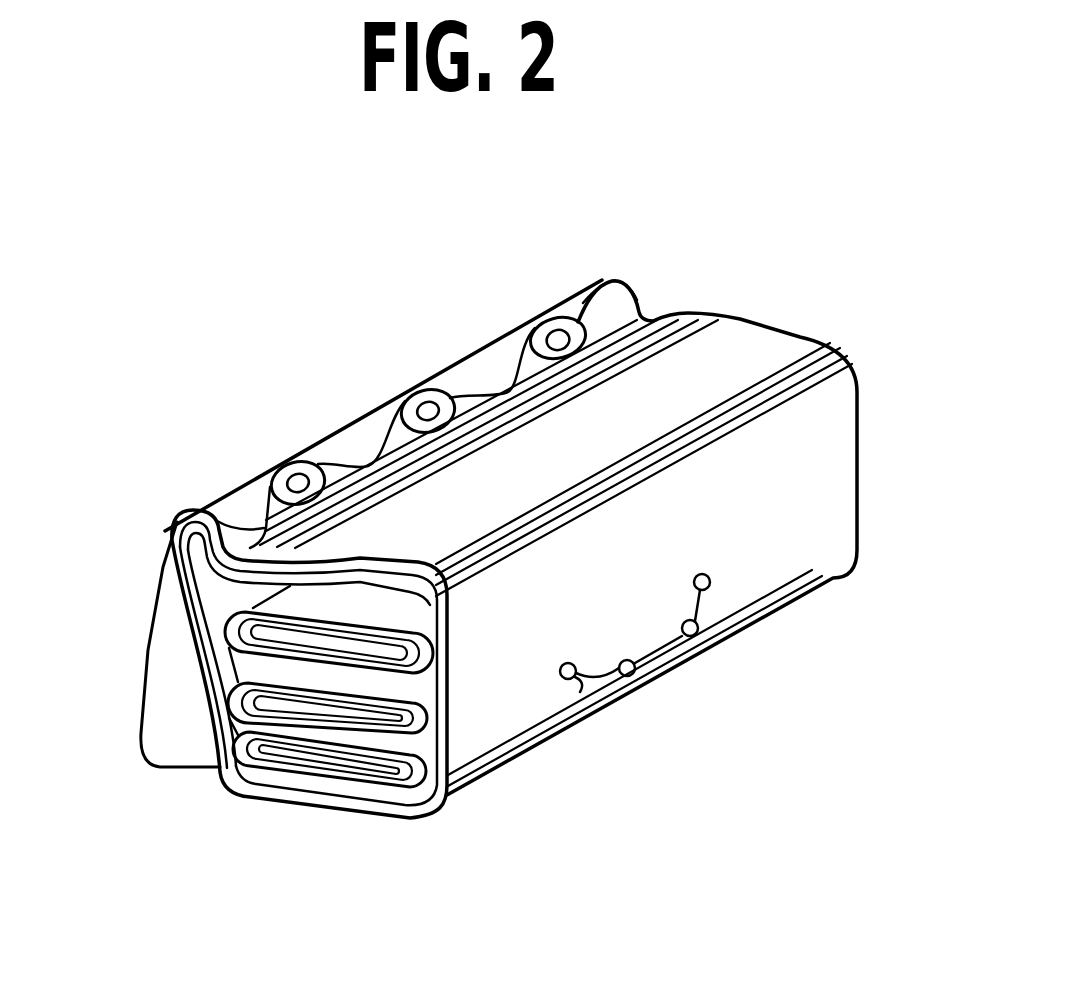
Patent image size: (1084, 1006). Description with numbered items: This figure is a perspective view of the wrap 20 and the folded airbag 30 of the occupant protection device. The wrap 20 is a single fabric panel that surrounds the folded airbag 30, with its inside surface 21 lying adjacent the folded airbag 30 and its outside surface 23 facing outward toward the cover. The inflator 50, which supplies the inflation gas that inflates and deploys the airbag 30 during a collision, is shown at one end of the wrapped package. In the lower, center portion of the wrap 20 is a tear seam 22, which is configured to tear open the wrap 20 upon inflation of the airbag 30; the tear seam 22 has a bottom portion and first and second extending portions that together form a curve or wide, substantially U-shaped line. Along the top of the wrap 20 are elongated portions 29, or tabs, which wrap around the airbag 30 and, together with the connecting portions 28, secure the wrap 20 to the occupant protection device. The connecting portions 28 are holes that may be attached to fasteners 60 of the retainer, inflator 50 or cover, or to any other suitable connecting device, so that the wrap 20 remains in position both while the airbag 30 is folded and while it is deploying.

The wrap 20 is at (797, 447).
The inside surface 21 is at (228, 727).
The tear seam 22 is at (708, 618).
The outside surface 23 is at (833, 533).
The connecting portions 28 is at (540, 348).
The elongated portions 29 is at (604, 326).
The airbag 30 is at (262, 614).
The inflator 50 is at (163, 603).
The fasteners 60 is at (297, 481).